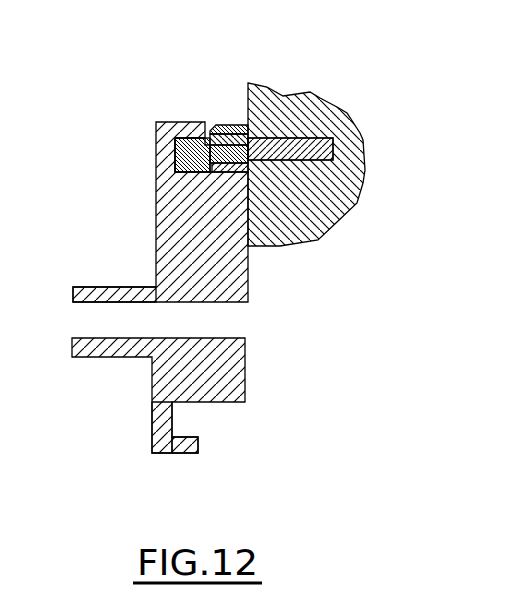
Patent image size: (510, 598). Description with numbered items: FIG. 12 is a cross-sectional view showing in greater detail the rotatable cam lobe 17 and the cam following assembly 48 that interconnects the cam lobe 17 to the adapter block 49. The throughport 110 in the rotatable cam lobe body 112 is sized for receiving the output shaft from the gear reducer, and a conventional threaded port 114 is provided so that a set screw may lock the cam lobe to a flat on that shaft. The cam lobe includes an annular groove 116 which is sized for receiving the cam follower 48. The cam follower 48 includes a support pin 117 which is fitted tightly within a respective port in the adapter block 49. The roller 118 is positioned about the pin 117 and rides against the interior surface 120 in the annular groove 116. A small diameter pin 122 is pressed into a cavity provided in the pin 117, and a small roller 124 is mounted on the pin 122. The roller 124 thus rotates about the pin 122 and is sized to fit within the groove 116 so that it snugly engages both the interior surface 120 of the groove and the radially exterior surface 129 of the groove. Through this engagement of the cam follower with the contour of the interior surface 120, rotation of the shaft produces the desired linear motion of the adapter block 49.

The rotatable cam lobe 17 is at (273, 415).
The cam following assembly 48 is at (217, 100).
The adapter block 49 is at (318, 120).
The throughport 110 is at (218, 340).
The rotatable cam lobe body 112 is at (225, 268).
The threaded port 114 is at (108, 295).
The annular groove 116 is at (173, 418).
The support pin 117 is at (362, 137).
The roller 118 is at (228, 125).
The interior surface 120 is at (227, 403).
The small diameter pin 122 is at (172, 156).
The small roller 124 is at (188, 138).
The radially exterior surface 129 is at (170, 420).